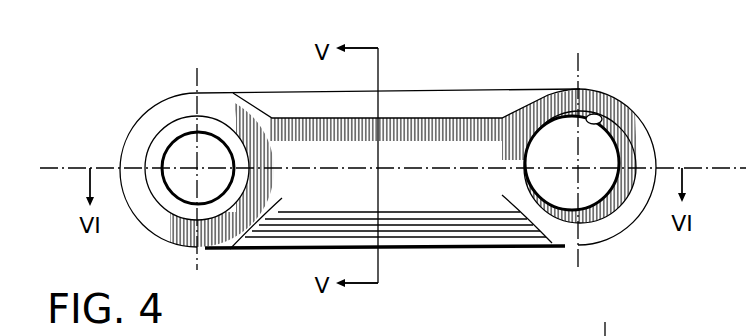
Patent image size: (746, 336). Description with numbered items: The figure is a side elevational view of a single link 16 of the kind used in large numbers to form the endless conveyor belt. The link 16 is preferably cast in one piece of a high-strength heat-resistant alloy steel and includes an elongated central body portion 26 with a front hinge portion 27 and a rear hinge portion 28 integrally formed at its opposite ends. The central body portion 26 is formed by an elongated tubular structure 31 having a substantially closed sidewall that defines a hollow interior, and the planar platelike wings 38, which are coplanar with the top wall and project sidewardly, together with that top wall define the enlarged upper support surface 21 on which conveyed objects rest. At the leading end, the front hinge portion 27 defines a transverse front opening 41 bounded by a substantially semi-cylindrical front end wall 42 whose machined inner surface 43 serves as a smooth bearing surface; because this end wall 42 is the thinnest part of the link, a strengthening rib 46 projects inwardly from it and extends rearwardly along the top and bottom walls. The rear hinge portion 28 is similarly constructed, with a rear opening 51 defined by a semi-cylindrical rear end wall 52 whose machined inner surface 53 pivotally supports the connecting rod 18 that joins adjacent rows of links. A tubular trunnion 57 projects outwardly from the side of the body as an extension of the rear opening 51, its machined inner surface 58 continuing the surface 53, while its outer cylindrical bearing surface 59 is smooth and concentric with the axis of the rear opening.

The link 16 is at (455, 70).
The connecting rod 18 is at (625, 335).
The upper support surface 21 is at (504, 86).
The central body portion 26 is at (455, 252).
The front hinge portion 27 is at (627, 238).
The rear hinge portion 28 is at (148, 101).
The tubular structure 31 is at (465, 210).
The wings 38 is at (400, 98).
The front opening 41 is at (558, 140).
The front end wall 42 is at (648, 152).
The inner surface 43 is at (596, 114).
The strengthening rib 46 is at (623, 138).
The rear opening 51 is at (187, 150).
The rear end wall 52 is at (139, 145).
The inner surface 53 is at (246, 208).
The trunnion 57 is at (213, 125).
The inner surface 58 is at (212, 195).
The outer cylindrical bearing surface 59 is at (158, 209).